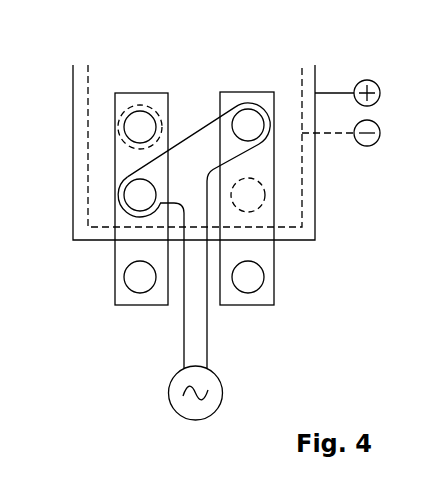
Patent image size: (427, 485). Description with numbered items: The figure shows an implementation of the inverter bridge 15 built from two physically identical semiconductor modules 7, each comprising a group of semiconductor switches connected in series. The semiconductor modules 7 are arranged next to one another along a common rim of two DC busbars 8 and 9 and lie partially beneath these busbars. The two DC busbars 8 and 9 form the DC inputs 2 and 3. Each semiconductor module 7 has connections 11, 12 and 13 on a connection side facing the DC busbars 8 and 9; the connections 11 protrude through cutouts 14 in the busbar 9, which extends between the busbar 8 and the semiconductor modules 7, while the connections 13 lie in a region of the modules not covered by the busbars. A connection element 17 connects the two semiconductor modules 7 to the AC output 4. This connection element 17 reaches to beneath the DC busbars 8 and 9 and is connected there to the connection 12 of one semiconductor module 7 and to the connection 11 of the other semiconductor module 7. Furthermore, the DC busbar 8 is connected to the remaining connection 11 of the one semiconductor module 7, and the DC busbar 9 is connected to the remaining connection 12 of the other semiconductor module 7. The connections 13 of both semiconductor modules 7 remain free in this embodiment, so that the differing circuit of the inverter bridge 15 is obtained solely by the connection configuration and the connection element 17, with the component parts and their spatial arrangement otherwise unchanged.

The DC input 2 is at (340, 83).
The DC input 3 is at (340, 142).
The AC output 4 is at (218, 408).
The semiconductor module 7 is at (108, 315).
The DC busbar 8 is at (316, 234).
The DC busbar 9 is at (308, 192).
The connection 11 is at (128, 139).
The connection 12 is at (127, 203).
The connection 13 is at (125, 280).
The cutout 14 is at (118, 130).
The inverter bridge 15 is at (283, 284).
The connection element 17 is at (184, 337).